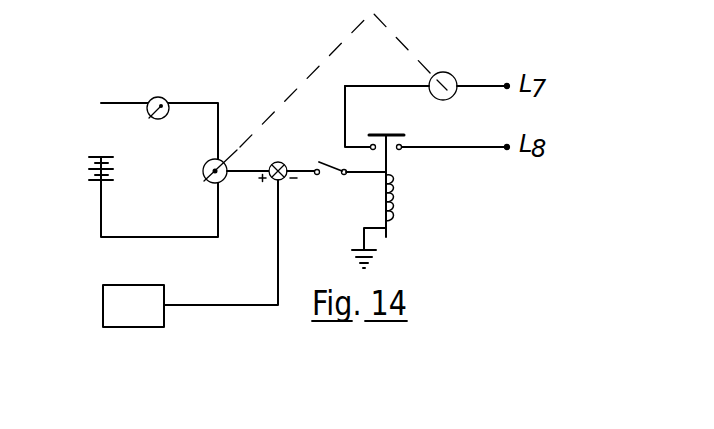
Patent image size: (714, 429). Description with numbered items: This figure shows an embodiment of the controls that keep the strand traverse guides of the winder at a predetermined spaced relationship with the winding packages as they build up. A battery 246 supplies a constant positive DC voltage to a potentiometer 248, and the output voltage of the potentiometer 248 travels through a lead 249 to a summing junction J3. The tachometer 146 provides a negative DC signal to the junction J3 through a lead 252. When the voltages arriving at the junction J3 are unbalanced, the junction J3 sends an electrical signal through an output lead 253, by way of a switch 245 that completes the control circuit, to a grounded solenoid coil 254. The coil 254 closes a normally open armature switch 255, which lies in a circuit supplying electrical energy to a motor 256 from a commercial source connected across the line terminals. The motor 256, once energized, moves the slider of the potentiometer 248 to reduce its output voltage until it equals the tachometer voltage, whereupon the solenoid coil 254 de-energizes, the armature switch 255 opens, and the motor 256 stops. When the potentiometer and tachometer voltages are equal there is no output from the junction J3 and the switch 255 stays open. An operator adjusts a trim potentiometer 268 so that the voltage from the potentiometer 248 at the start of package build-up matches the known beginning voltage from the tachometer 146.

The battery 246 is at (108, 176).
The trim potentiometer 268 is at (167, 122).
The potentiometer 248 is at (203, 164).
The lead 249 is at (244, 173).
The summing junction J3 is at (275, 158).
The lead 252 is at (278, 249).
The tachometer 146 is at (147, 262).
The output lead 253 is at (304, 171).
The switch 245 is at (327, 175).
The solenoid coil 254 is at (396, 198).
The armature switch 255 is at (402, 112).
The motor 256 is at (467, 48).